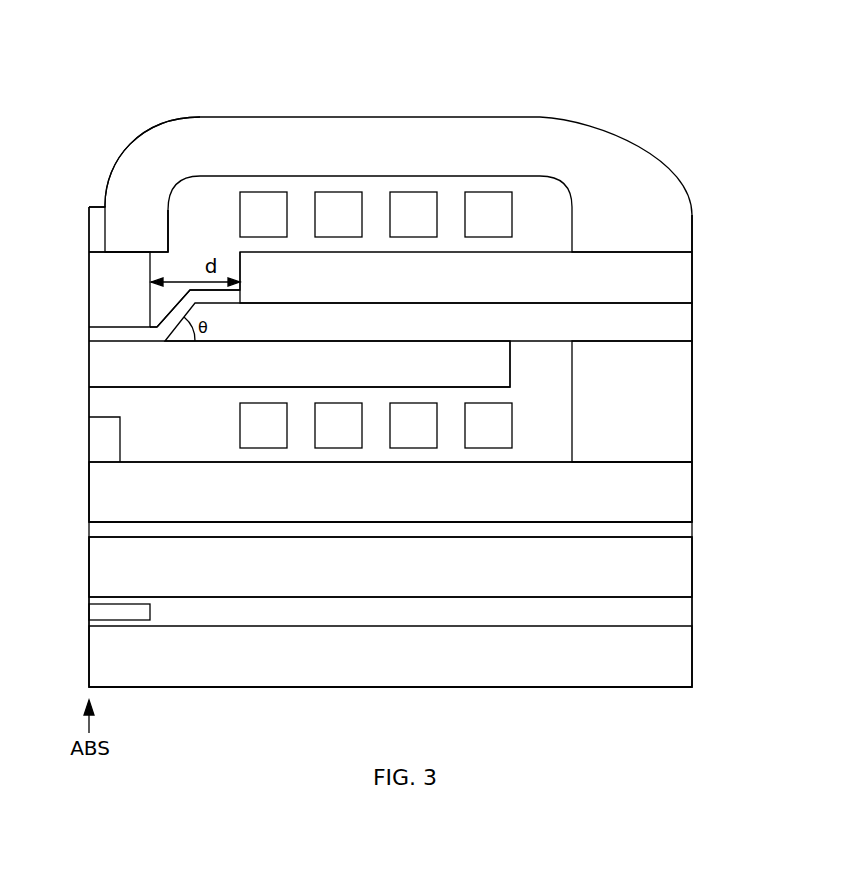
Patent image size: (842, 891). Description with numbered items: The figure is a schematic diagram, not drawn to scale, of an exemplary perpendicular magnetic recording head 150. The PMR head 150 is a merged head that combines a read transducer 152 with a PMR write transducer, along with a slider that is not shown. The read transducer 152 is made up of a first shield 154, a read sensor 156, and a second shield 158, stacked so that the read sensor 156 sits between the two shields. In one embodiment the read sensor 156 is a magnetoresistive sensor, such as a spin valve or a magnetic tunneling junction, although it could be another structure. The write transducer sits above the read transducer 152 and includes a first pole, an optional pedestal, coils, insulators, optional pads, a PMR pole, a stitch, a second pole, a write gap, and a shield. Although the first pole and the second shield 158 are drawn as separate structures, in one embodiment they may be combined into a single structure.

The PMR head 150 is at (387, 51).
The read transducer 152 is at (698, 530).
The first shield 154 is at (118, 688).
The read sensor 156 is at (88, 613).
The second shield 158 is at (88, 568).